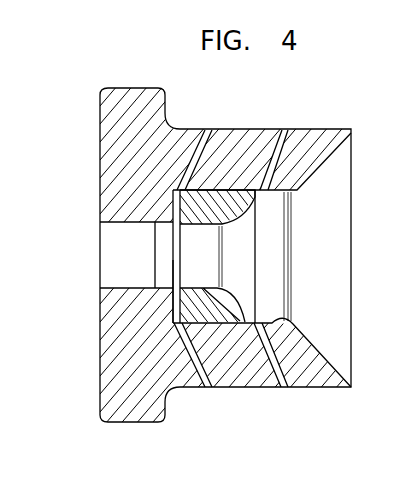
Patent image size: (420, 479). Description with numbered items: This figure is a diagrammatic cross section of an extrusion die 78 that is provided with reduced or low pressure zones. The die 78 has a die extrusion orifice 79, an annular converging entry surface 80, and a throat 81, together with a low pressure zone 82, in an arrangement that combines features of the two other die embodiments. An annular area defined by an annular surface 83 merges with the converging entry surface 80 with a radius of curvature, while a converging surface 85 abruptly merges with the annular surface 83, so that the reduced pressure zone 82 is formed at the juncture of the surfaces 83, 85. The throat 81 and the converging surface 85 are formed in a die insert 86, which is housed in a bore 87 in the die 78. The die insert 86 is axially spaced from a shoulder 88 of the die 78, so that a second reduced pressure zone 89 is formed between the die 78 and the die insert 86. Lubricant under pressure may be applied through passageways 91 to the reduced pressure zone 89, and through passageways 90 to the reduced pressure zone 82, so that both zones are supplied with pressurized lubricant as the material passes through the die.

The die 78 is at (245, 129).
The die extrusion orifice 79 is at (165, 285).
The annular converging entry surface 80 is at (323, 158).
The throat 81 is at (222, 230).
The low pressure zone 82 is at (262, 192).
The annular surface 83 is at (288, 327).
The converging surface 85 is at (222, 290).
The die insert 86 is at (232, 200).
The bore 87 is at (208, 388).
The shoulder 88 is at (173, 204).
The reduced pressure zone 89 is at (173, 297).
The passageways 90 is at (285, 388).
The passageways 91 is at (208, 129).